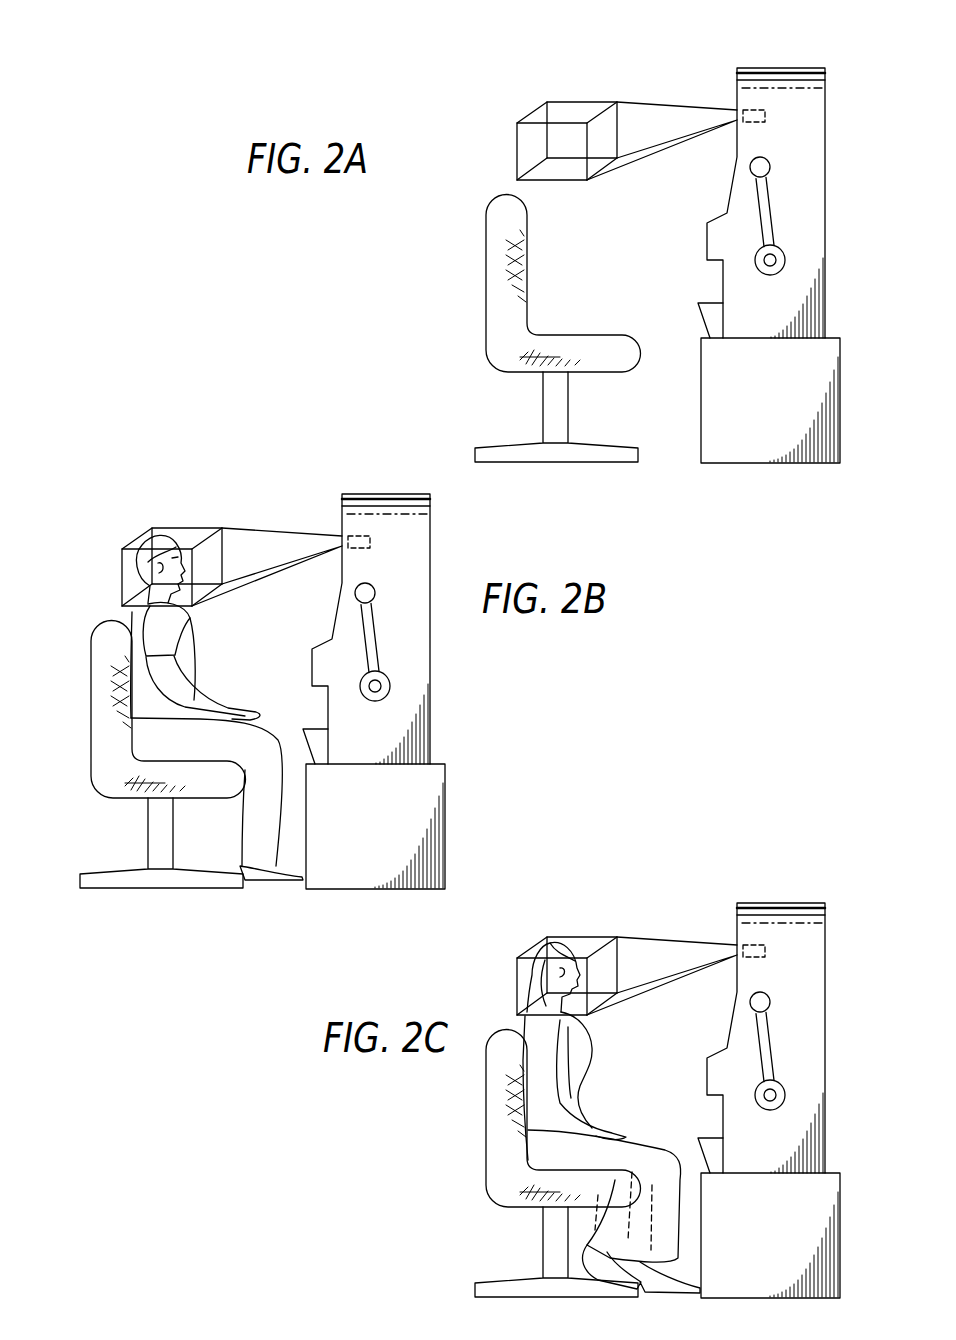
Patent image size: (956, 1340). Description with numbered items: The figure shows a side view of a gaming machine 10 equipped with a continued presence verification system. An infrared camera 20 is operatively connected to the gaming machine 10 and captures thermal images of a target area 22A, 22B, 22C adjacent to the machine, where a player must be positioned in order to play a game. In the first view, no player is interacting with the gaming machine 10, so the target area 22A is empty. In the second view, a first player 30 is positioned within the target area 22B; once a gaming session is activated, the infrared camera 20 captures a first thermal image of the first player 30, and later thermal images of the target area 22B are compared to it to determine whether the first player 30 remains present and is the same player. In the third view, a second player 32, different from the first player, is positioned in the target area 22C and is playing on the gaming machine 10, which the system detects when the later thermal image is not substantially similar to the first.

In FIG. 2A, the gaming machine 10 is at (780, 68).
In FIG. 2B, the gaming machine 10 is at (374, 665).
In FIG. 2C, the gaming machine 10 is at (769, 1074).
In FIG. 2A, the infrared camera 20 is at (767, 115).
In FIG. 2B, the infrared camera 20 is at (381, 564).
In FIG. 2C, the infrared camera 20 is at (776, 973).
In FIG. 2A, the target area 22A is at (568, 112).
In FIG. 2B, the target area 22B is at (232, 535).
In FIG. 2C, the target area 22C is at (627, 944).
In FIG. 2B, the first player 30 is at (128, 618).
In FIG. 2C, the second player 32 is at (523, 1024).